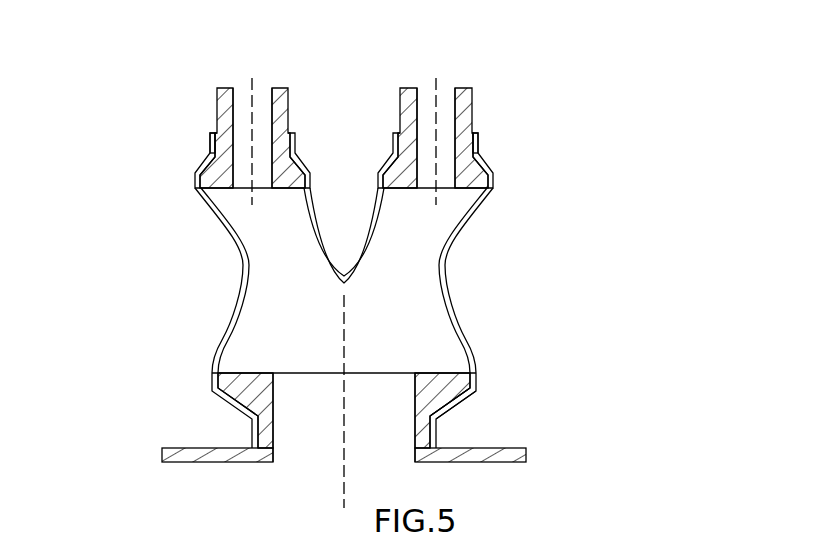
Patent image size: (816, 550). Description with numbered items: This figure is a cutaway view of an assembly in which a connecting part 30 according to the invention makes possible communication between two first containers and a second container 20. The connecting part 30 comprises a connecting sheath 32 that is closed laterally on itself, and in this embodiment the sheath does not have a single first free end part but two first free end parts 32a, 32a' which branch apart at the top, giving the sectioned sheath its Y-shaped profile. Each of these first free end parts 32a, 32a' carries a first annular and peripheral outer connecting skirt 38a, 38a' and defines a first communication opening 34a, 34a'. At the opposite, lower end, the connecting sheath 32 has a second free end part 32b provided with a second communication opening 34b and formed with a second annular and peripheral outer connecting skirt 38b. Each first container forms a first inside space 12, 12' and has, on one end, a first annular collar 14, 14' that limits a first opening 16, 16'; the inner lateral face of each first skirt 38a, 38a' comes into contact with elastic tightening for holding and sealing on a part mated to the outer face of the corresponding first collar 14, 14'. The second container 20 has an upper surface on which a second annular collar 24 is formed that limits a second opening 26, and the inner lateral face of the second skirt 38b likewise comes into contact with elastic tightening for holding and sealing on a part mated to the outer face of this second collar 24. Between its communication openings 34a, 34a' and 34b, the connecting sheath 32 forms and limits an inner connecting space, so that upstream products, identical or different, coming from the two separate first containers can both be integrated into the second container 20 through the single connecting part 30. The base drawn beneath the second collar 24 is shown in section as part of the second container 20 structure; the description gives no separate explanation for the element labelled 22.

The first inside space 12 is at (162, 124).
The first inside space 12' is at (527, 125).
The first annular collar 14 is at (196, 131).
The first annular collar 14' is at (491, 132).
The first opening 16 is at (187, 160).
The first opening 16' is at (496, 160).
The second container 20 is at (532, 458).
The base plate 22 is at (420, 484).
The second annular collar 24 is at (450, 373).
The second opening 26 is at (462, 328).
The connecting part 30 is at (458, 277).
The connecting sheath 32 is at (373, 370).
The first free end part 32a is at (115, 137).
The first free end part 32a' is at (574, 136).
The second free end part 32b is at (483, 395).
The first communication opening 34a is at (179, 228).
The first communication opening 34a' is at (512, 228).
The second communication opening 34b is at (305, 423).
The first annular and peripheral outer connecting skirt 38a is at (182, 160).
The first annular and peripheral outer connecting skirt 38a' is at (507, 160).
The second annular and peripheral outer connecting skirt 38b is at (474, 398).